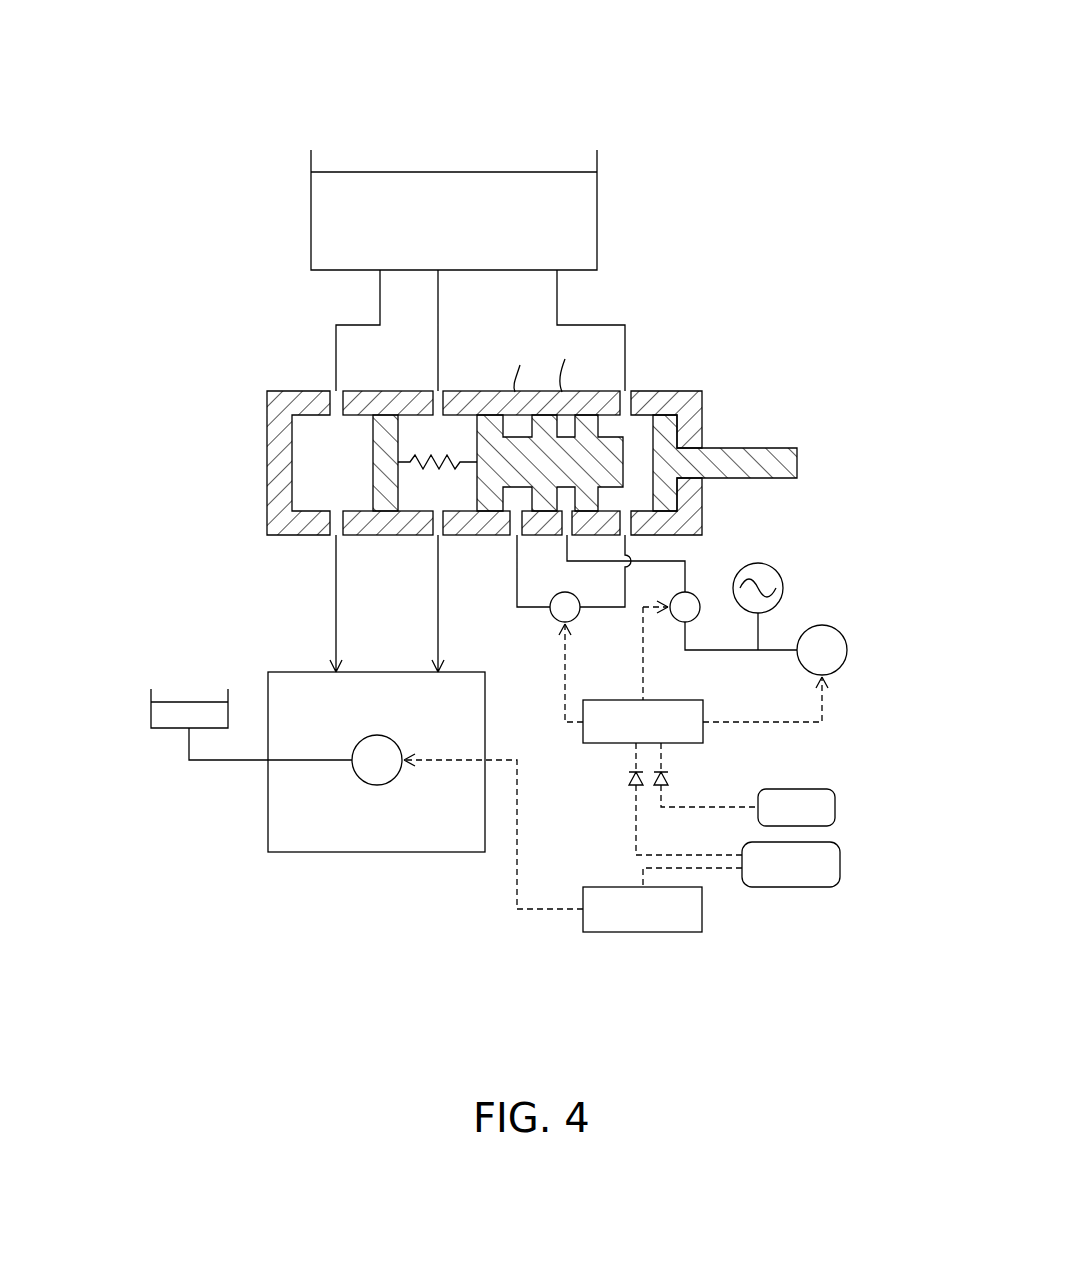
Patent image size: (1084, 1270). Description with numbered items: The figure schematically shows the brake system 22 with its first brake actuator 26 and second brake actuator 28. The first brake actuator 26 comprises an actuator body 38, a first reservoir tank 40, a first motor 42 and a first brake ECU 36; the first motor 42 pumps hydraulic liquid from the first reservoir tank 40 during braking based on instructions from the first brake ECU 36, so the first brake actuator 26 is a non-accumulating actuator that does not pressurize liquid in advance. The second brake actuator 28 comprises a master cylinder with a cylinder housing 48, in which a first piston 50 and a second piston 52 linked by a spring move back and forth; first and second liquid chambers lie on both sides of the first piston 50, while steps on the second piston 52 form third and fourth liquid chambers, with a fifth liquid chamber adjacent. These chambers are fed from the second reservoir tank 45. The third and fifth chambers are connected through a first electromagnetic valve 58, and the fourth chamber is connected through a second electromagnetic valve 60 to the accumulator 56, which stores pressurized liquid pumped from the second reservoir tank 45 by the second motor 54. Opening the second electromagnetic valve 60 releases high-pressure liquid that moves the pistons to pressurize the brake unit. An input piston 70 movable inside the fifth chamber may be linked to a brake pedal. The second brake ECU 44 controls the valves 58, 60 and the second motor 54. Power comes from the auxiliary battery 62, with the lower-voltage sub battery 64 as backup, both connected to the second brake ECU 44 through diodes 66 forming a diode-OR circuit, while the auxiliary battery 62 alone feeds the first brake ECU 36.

The brake system 22 is at (473, 78).
The second brake actuator 28 is at (692, 243).
The second reservoir tank 45 is at (598, 200).
The cylinder housing 48 is at (282, 392).
The first piston 50 is at (388, 500).
The second piston 52 is at (490, 503).
The input piston 70 is at (777, 443).
The first electromagnetic valve 58 is at (553, 618).
The second electromagnetic valve 60 is at (692, 592).
The accumulator 56 is at (773, 563).
The second motor 54 is at (828, 625).
The second brake ECU 44 is at (686, 700).
The diodes 66 is at (660, 785).
The sub battery 64 is at (818, 789).
The auxiliary battery 62 is at (823, 887).
The first brake ECU 36 is at (675, 933).
The actuator body 38 is at (293, 671).
The first motor 42 is at (375, 785).
The first reservoir tank 40 is at (167, 730).
The first brake actuator 26 is at (262, 893).